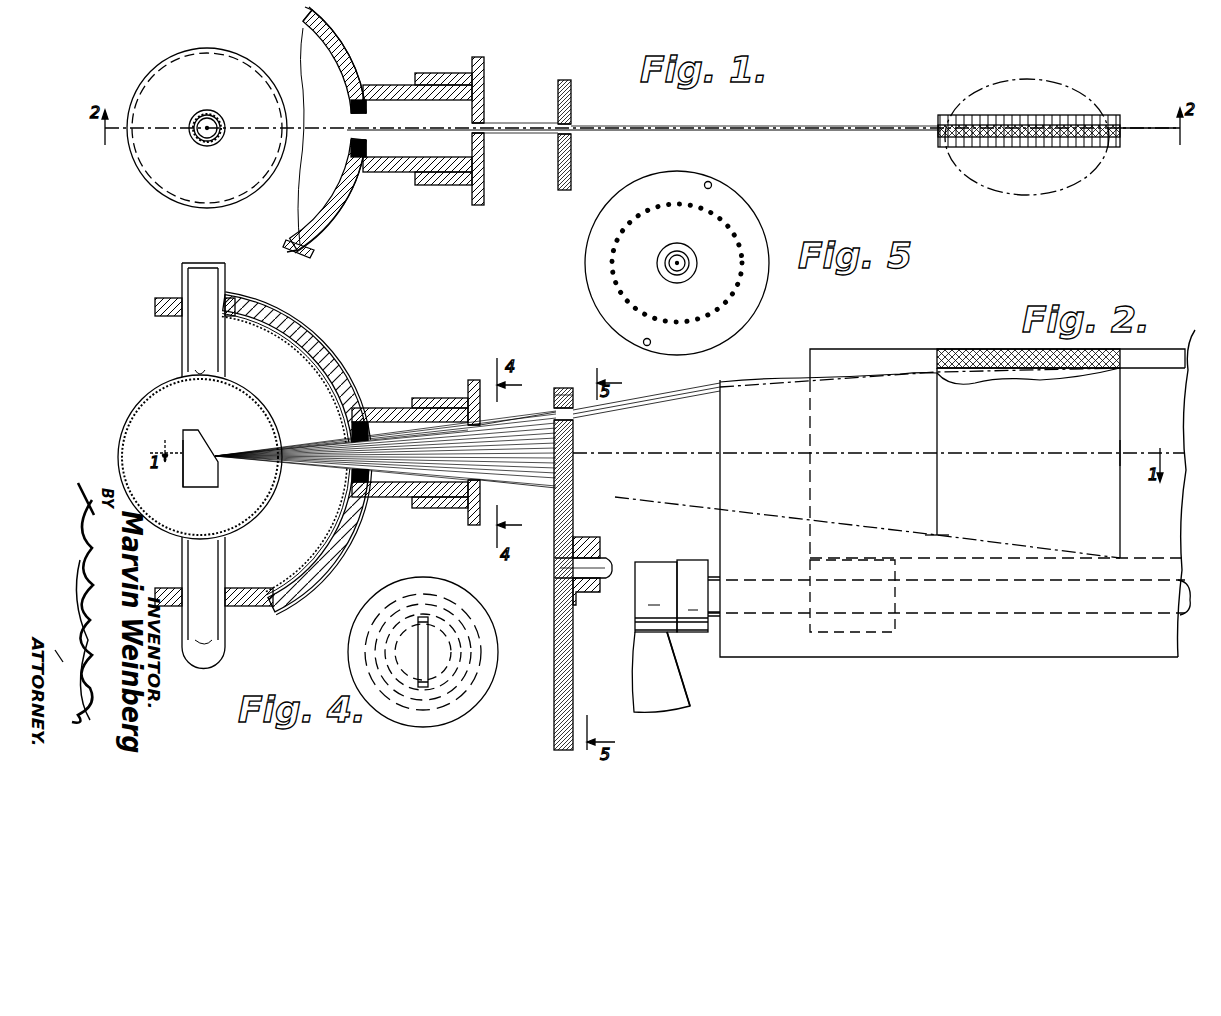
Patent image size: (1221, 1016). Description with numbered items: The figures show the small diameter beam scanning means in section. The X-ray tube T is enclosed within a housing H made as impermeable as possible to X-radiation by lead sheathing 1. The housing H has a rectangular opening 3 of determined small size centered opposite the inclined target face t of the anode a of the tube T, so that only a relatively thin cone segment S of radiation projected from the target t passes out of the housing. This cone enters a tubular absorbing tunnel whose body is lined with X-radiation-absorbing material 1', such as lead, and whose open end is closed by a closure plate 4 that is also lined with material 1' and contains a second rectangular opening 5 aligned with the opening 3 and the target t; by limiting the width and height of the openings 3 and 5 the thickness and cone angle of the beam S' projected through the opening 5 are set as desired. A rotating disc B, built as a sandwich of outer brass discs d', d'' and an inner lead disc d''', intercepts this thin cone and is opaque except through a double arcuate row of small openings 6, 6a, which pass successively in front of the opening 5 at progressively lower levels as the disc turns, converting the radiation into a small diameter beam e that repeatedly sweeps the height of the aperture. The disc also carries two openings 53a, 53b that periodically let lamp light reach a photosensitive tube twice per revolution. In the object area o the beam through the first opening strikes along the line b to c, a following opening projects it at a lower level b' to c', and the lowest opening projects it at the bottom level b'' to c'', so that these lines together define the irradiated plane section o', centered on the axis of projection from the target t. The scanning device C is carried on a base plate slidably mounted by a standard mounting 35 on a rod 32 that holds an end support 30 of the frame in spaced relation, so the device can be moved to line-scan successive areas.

In FIG. 1, the X-ray tube T is at (188, 57).
In FIG. 2, the X-ray tube T is at (255, 512).
In FIG. 1, the inclined target face t is at (215, 120).
In FIG. 2, the inclined target face t is at (205, 442).
In FIG. 1, the anode a is at (193, 133).
In FIG. 2, the anode a is at (183, 467).
In FIG. 1, the lead sheathing 1 is at (320, 132).
In FIG. 2, the lead sheathing 1 is at (297, 453).
In FIG. 1, the X-radiation-absorbing material 1' is at (411, 102).
In FIG. 2, the X-radiation-absorbing material 1' is at (410, 420).
In FIG. 1, the housing H is at (404, 78).
In FIG. 2, the housing H is at (305, 332).
In FIG. 1, the rectangular opening 3 is at (348, 126).
In FIG. 2, the rectangular opening 3 is at (345, 464).
In FIG. 1, the closure plate 4 is at (484, 75).
In FIG. 4, the closure plate 4 is at (445, 590).
In FIG. 2, the closure plate 4 is at (476, 380).
In FIG. 1, the rectangular opening 5 is at (470, 128).
In FIG. 4, the rectangular opening 5 is at (430, 650).
In FIG. 2, the rectangular opening 5 is at (474, 446).
In FIG. 1, the cone segment of X-radiation S is at (521, 108).
In FIG. 2, the light beam S' is at (518, 435).
In FIG. 1, the rotating disc B is at (568, 78).
In FIG. 5, the rotating disc B is at (756, 228).
In FIG. 2, the rotating disc B is at (561, 388).
In FIG. 1, the outer disc d' is at (546, 166).
In FIG. 2, the outer disc d' is at (553, 369).
In FIG. 1, the outer disc d'' is at (569, 185).
In FIG. 2, the outer disc d'' is at (590, 381).
In FIG. 2, the inner disc d''' is at (582, 370).
In FIG. 1, the small diameter beam e is at (790, 126).
In FIG. 2, the small diameter beam e is at (672, 398).
In FIG. 1, the object area o is at (1029, 118).
In FIG. 2, the object area o is at (997, 342).
In FIG. 1, the irradiated plane section o' is at (1150, 105).
In FIG. 2, the irradiated plane section o' is at (1140, 463).
In FIG. 5, the small diameter openings 6 is at (740, 288).
In FIG. 2, the small diameter openings 6 is at (575, 430).
In FIG. 5, the second row of openings 6a is at (617, 243).
In FIG. 5, the opening 53a is at (712, 183).
In FIG. 5, the opening 53b is at (652, 343).
In FIG. 2, the object point b is at (919, 451).
In FIG. 2, the object point b' is at (873, 470).
In FIG. 2, the object point b'' is at (927, 518).
In FIG. 2, the object point c is at (1061, 373).
In FIG. 2, the object point c' is at (1138, 444).
In FIG. 2, the object point c'' is at (997, 543).
In FIG. 2, the scanning device C is at (963, 482).
In FIG. 2, the end support 30 is at (665, 702).
In FIG. 2, the rod 32 is at (708, 634).
In FIG. 2, the mounting 35 is at (860, 632).